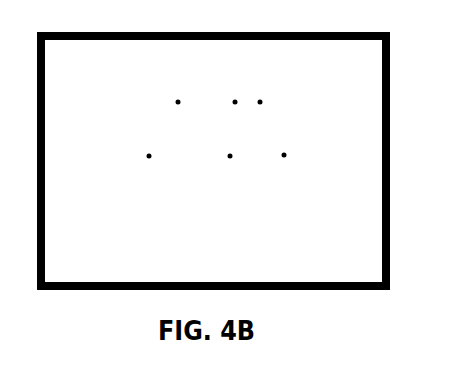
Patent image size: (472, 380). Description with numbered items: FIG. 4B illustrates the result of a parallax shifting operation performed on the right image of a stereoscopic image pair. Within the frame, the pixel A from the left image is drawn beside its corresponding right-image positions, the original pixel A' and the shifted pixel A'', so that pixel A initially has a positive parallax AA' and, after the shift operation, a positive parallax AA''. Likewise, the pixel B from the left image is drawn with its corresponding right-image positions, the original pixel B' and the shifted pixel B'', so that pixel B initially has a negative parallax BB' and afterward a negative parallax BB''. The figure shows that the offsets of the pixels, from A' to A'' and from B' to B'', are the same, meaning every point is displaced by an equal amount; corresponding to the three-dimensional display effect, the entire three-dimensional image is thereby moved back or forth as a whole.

The pixel A is at (155, 176).
The right-image pixel A' is at (237, 176).
The shifted right-image pixel A" A'' is at (296, 175).
The pixel B is at (274, 102).
The right-image pixel B' is at (192, 102).
The shifted right-image pixel B" B'' is at (239, 86).